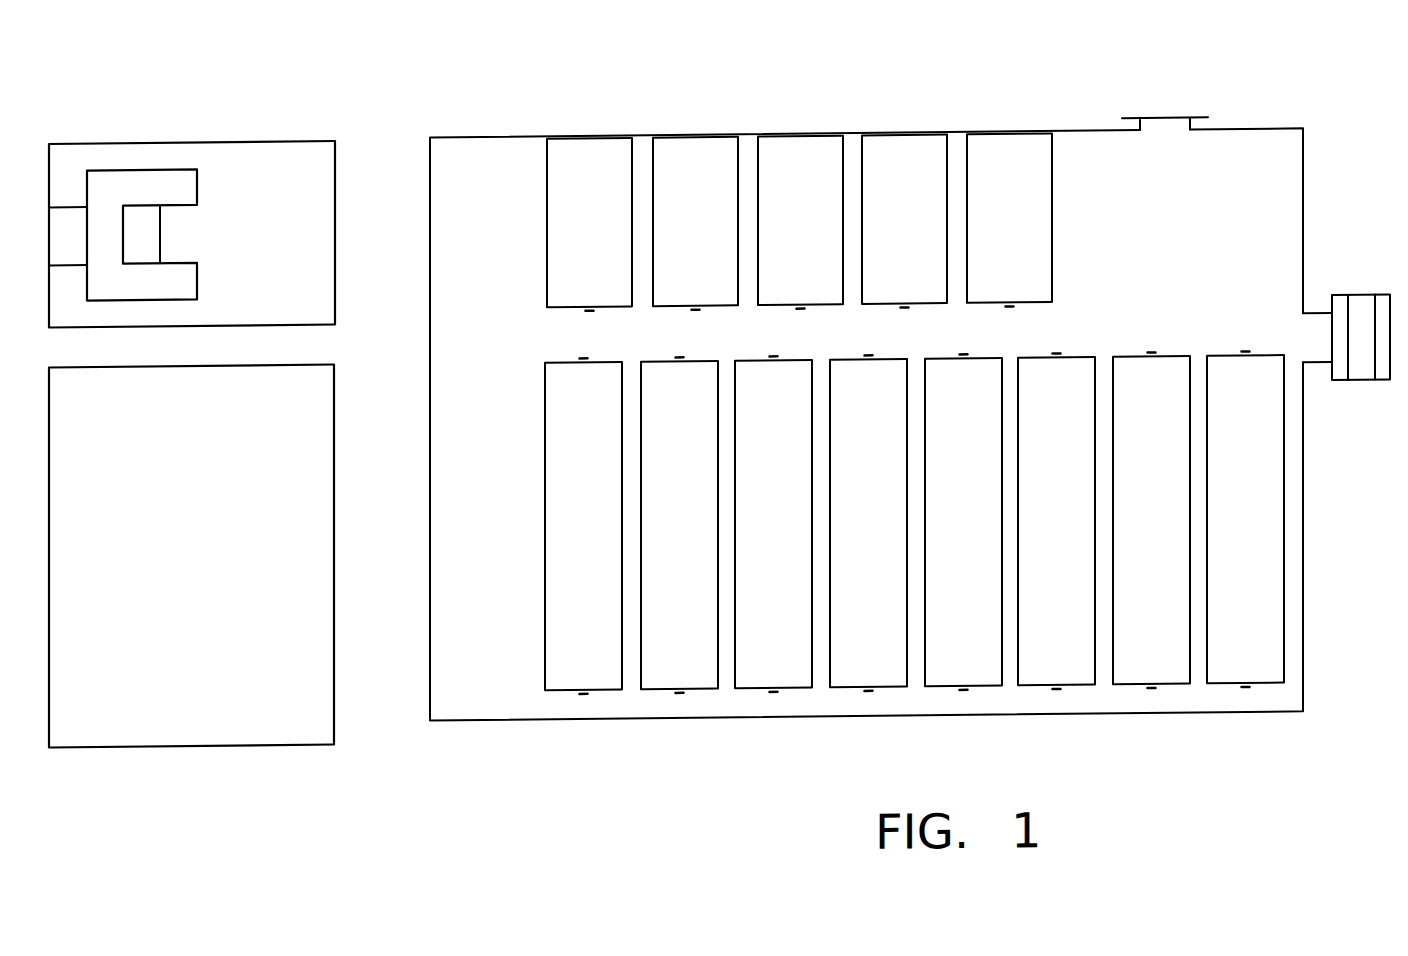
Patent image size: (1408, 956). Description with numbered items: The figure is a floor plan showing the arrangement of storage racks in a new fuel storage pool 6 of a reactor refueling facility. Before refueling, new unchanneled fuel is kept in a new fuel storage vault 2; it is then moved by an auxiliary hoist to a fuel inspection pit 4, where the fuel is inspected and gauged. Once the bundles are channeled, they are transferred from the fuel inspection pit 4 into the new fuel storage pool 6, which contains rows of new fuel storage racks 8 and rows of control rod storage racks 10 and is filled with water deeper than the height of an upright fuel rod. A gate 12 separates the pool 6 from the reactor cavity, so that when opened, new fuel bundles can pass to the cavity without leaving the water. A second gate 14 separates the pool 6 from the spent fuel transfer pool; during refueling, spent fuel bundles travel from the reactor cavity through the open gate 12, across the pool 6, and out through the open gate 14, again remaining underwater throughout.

The new fuel storage vault 2 is at (230, 776).
The fuel inspection pit 4 is at (197, 118).
The new fuel storage pool 6 is at (1170, 758).
The new fuel storage racks 8 is at (955, 680).
The control rod storage racks 10 is at (903, 164).
The gate 12 is at (1353, 307).
The gate 14 is at (1165, 125).